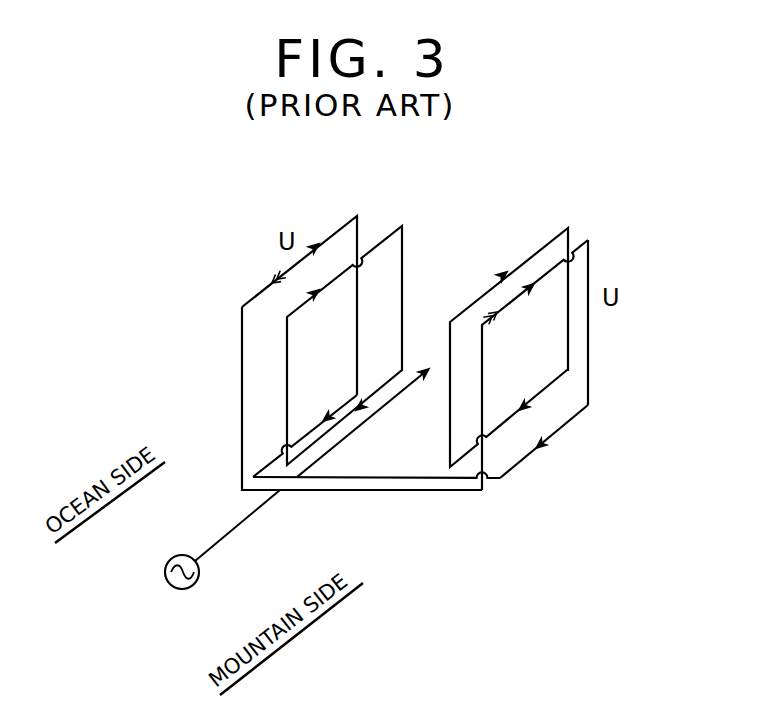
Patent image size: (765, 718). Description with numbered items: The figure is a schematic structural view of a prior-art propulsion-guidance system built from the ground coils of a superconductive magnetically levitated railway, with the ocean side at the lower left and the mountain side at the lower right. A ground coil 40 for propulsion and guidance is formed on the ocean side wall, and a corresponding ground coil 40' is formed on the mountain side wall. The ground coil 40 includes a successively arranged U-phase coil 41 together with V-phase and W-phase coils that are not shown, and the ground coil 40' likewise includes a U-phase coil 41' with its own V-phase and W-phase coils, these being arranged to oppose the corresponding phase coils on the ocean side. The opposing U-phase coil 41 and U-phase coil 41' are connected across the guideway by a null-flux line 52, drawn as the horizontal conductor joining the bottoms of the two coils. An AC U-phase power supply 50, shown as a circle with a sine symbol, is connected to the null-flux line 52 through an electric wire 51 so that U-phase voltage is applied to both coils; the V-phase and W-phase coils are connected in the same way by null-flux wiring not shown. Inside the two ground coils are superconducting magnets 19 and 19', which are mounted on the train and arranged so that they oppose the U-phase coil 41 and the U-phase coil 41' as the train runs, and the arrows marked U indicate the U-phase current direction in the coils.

The superconducting magnet 19 is at (378, 320).
The superconducting magnet 19' is at (525, 317).
The ground coil 40 is at (322, 310).
The ground coil 40' is at (572, 345).
The U-phase coil 41 is at (320, 398).
The U-phase coil 41' is at (628, 322).
The AC U-phase power supply 50 is at (165, 573).
The electric wire 51 is at (250, 517).
The null-flux line 52 is at (370, 490).